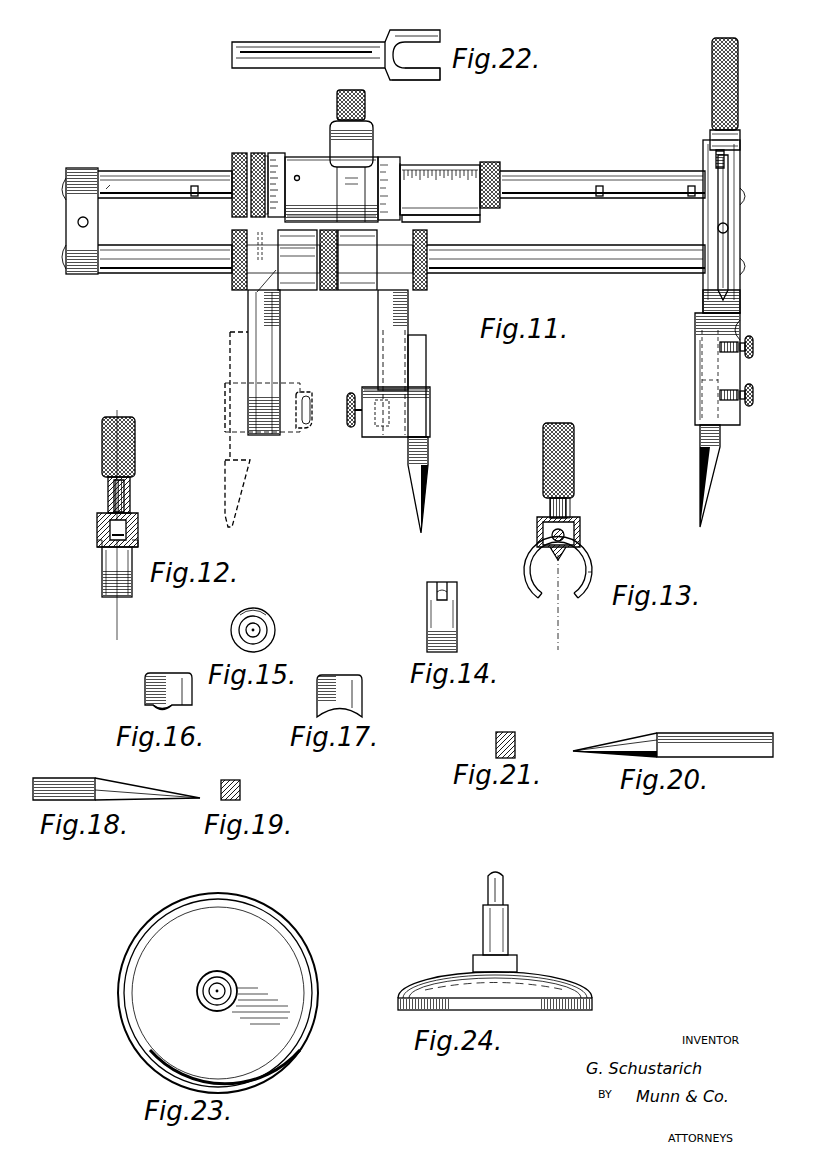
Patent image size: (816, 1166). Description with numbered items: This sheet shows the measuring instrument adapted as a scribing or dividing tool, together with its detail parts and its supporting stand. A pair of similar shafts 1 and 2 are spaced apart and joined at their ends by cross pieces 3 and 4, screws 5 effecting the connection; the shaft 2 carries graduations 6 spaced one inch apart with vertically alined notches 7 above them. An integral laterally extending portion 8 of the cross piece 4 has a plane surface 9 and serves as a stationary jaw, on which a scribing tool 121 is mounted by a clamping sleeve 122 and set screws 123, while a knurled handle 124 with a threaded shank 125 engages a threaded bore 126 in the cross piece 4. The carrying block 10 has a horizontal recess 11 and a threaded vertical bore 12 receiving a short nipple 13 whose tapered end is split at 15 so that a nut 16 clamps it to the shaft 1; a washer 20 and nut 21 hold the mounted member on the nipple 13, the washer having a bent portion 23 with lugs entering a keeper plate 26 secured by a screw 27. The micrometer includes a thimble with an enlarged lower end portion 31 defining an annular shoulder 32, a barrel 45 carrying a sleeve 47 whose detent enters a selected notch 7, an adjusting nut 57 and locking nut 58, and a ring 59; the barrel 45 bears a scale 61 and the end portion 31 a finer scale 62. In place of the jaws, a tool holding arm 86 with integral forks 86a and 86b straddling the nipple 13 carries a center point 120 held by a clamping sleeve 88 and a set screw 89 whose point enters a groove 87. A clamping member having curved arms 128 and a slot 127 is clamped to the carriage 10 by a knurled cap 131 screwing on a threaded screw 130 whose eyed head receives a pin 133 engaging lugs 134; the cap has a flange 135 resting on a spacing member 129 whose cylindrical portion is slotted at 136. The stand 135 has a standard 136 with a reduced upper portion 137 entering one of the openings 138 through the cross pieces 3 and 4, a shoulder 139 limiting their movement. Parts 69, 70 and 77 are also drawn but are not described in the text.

In FIG. 11, the shaft 1 is at (626, 274).
In FIG. 11, the shaft 2 is at (628, 200).
In FIG. 11, the cross piece 3 is at (90, 248).
In FIG. 11, the cross piece 4 is at (703, 240).
In FIG. 11, the screws 5 is at (64, 178).
In FIG. 11, the graduations 6 is at (108, 183).
In FIG. 11, the notches 7 is at (194, 197).
In FIG. 11, the laterally extending portion 8 is at (703, 306).
In FIG. 11, the plane surface 9 is at (700, 350).
In FIG. 11, the carrying block 10 is at (302, 296).
In FIG. 11, the horizontal recess 11 is at (340, 290).
In FIG. 13, the threaded vertical bore 12 is at (543, 480).
In FIG. 11, the short nipple 13 is at (357, 260).
In FIG. 12, the short nipple 13 is at (100, 477).
In FIG. 11, the split 15 is at (317, 260).
In FIG. 11, the nut 16 is at (320, 278).
In FIG. 11, the washer 20 is at (234, 232).
In FIG. 11, the nut 21 is at (428, 290).
In FIG. 11, the bent portion 23 is at (398, 232).
In FIG. 11, the keeper plate 26 is at (280, 256).
In FIG. 11, the screw 27 is at (325, 258).
In FIG. 11, the enlarged lower end portion 31 is at (406, 156).
In FIG. 11, the annular shoulder 32 is at (384, 157).
In FIG. 11, the barrel 45 is at (460, 222).
In FIG. 11, the sleeve 47 is at (496, 162).
In FIG. 11, the adjusting nut 57 is at (262, 148).
In FIG. 11, the locking nut 58 is at (238, 153).
In FIG. 11, the ring 59 is at (282, 160).
In FIG. 11, the scale 61 is at (456, 165).
In FIG. 11, the scale 62 is at (426, 165).
In FIG. 11, the spindle 69 is at (730, 258).
In FIG. 11, the index hole 70 is at (300, 174).
In FIG. 11, the flange 77 is at (272, 153).
In FIG. 22, the tool holding arm 86 is at (330, 58).
In FIG. 11, the tool holding arm 86 is at (270, 366).
In FIG. 22, the fork 86a is at (436, 31).
In FIG. 11, the fork 86a is at (238, 276).
In FIG. 22, the fork 86b is at (422, 80).
In FIG. 22, the groove 87 is at (330, 36).
In FIG. 11, the groove 87 is at (250, 326).
In FIG. 11, the clamping sleeve 88 is at (290, 392).
In FIG. 11, the set screw 89 is at (348, 414).
In FIG. 11, the center point 120 is at (226, 468).
In FIG. 21, the center point 120 is at (512, 732).
In FIG. 20, the center point 120 is at (692, 740).
In FIG. 11, the scribing tool 121 is at (702, 448).
In FIG. 18, the scribing tool 121 is at (96, 778).
In FIG. 19, the scribing tool 121 is at (230, 780).
In FIG. 11, the clamping sleeve 122 is at (696, 376).
In FIG. 11, the set screws 123 is at (753, 350).
In FIG. 11, the knurled handle 124 is at (738, 108).
In FIG. 11, the threaded shank 125 is at (740, 152).
In FIG. 11, the threaded bore 126 is at (712, 153).
In FIG. 12, the slot 127 is at (138, 520).
In FIG. 13, the slot 127 is at (558, 558).
In FIG. 14, the slot 127 is at (442, 586).
In FIG. 11, the curved arm 128 is at (345, 196).
In FIG. 13, the curved arm 128 is at (534, 588).
In FIG. 14, the curved arm 128 is at (427, 642).
In FIG. 11, the spacing member 129 is at (330, 130).
In FIG. 12, the spacing member 129 is at (97, 537).
In FIG. 13, the spacing member 129 is at (537, 524).
In FIG. 15, the spacing member 129 is at (268, 614).
In FIG. 16, the spacing member 129 is at (146, 690).
In FIG. 17, the spacing member 129 is at (362, 696).
In FIG. 12, the threaded screw 130 is at (130, 491).
In FIG. 13, the threaded screw 130 is at (550, 508).
In FIG. 11, the knurled cap 131 is at (336, 104).
In FIG. 12, the knurled cap 131 is at (134, 470).
In FIG. 13, the knurled cap 131 is at (578, 464).
In FIG. 12, the pin 133 is at (138, 530).
In FIG. 13, the pin 133 is at (552, 537).
In FIG. 12, the lug 134 is at (97, 522).
In FIG. 14, the lug 134 is at (427, 584).
In FIG. 11, the flange 135 is at (366, 130).
In FIG. 12, the flange 135 is at (108, 508).
In FIG. 13, the flange 135 is at (570, 510).
In FIG. 23, the flange 135 is at (288, 980).
In FIG. 24, the flange 135 is at (536, 982).
In FIG. 15, the slot 136 is at (240, 632).
In FIG. 16, the slot 136 is at (152, 710).
In FIG. 23, the slot 136 is at (232, 978).
In FIG. 24, the slot 136 is at (500, 939).
In FIG. 23, the reduced upper portion 137 is at (230, 1010).
In FIG. 24, the reduced upper portion 137 is at (488, 892).
In FIG. 11, the openings 138 is at (77, 222).
In FIG. 23, the shoulder 139 is at (208, 1000).
In FIG. 24, the shoulder 139 is at (503, 896).